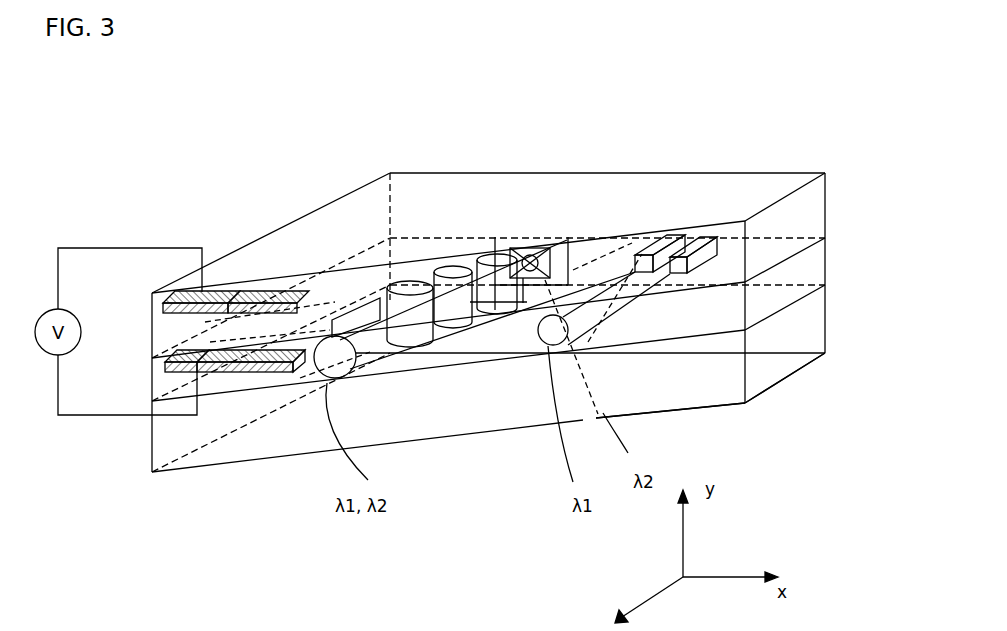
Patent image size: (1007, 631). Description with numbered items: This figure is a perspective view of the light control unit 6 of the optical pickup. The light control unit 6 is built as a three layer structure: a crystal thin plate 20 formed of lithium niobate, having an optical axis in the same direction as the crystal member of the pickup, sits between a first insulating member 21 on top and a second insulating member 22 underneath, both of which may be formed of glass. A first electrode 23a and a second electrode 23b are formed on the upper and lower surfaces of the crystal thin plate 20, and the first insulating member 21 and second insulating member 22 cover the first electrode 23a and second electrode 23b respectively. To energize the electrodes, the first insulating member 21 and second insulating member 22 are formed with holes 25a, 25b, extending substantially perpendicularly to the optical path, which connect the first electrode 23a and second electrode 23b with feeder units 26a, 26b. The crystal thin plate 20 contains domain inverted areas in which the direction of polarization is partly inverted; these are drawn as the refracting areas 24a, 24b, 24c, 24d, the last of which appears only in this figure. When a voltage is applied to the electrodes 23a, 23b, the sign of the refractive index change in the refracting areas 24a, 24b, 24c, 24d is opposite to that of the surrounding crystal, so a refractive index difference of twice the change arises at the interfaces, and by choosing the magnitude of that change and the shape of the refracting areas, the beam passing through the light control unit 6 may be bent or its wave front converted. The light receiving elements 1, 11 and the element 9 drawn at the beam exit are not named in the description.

The light control unit 6 is at (146, 109).
The first insulating member 21 is at (813, 213).
The crystal thin plate 20 is at (812, 266).
The second insulating member 22 is at (818, 320).
The feeder unit 26a is at (212, 292).
The hole 25a is at (265, 290).
The feeder unit 26b is at (177, 393).
The hole 25b is at (230, 373).
The refracting area 24a is at (390, 283).
The refracting area 24b is at (434, 268).
The refracting area 24c is at (488, 256).
The refracting area 24d is at (352, 300).
The wavelength separating element 9 is at (560, 248).
The first electrode 23a is at (598, 260).
The second electrode 23b is at (494, 345).
The light receiving element 1 is at (662, 238).
The light receiving element 11 is at (700, 245).